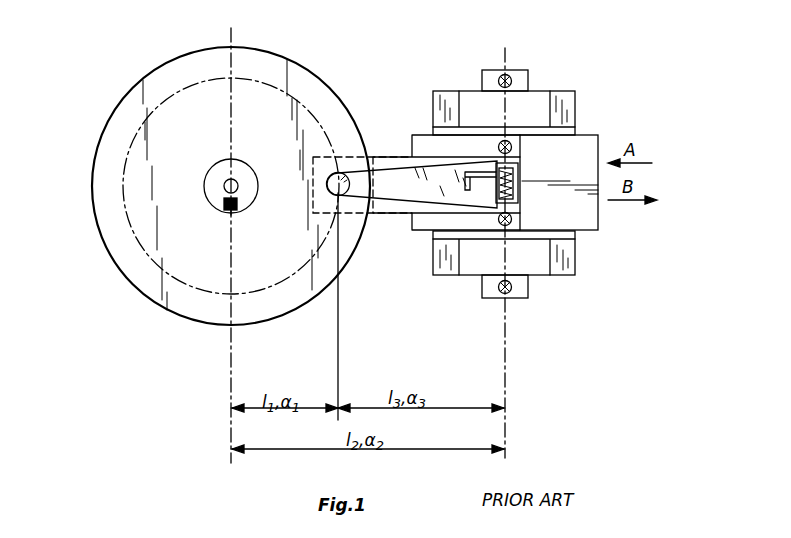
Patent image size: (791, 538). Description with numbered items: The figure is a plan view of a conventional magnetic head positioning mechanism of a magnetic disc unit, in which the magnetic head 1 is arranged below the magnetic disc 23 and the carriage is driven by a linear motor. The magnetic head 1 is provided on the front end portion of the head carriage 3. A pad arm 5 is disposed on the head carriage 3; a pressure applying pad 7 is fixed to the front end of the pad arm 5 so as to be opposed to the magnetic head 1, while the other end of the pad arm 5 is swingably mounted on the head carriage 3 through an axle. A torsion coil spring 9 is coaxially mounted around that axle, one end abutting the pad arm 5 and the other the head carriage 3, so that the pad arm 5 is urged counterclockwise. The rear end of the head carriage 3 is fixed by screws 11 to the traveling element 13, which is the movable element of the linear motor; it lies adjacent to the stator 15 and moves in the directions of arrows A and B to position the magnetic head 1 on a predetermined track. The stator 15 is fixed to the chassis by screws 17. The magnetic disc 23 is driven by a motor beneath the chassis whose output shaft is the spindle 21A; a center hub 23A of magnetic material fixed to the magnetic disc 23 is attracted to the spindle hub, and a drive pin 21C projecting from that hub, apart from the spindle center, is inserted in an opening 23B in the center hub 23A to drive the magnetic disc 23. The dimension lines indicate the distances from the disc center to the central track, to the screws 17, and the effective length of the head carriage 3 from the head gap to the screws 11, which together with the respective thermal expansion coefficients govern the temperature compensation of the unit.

The magnetic head 1 is at (333, 196).
The head carriage 3 is at (397, 212).
The pad arm 5 is at (390, 170).
The pressure applying pad 7 is at (340, 177).
The torsion coil spring 9 is at (470, 167).
The screws 11 is at (508, 142).
The traveling element 13 is at (583, 135).
The stator 15 is at (567, 91).
The screws 17 is at (508, 74).
The spindle 21A is at (236, 181).
The drive pin 21C is at (221, 212).
The magnetic disc 23 is at (133, 290).
The center hub 23A is at (207, 190).
The opening 23B is at (237, 206).